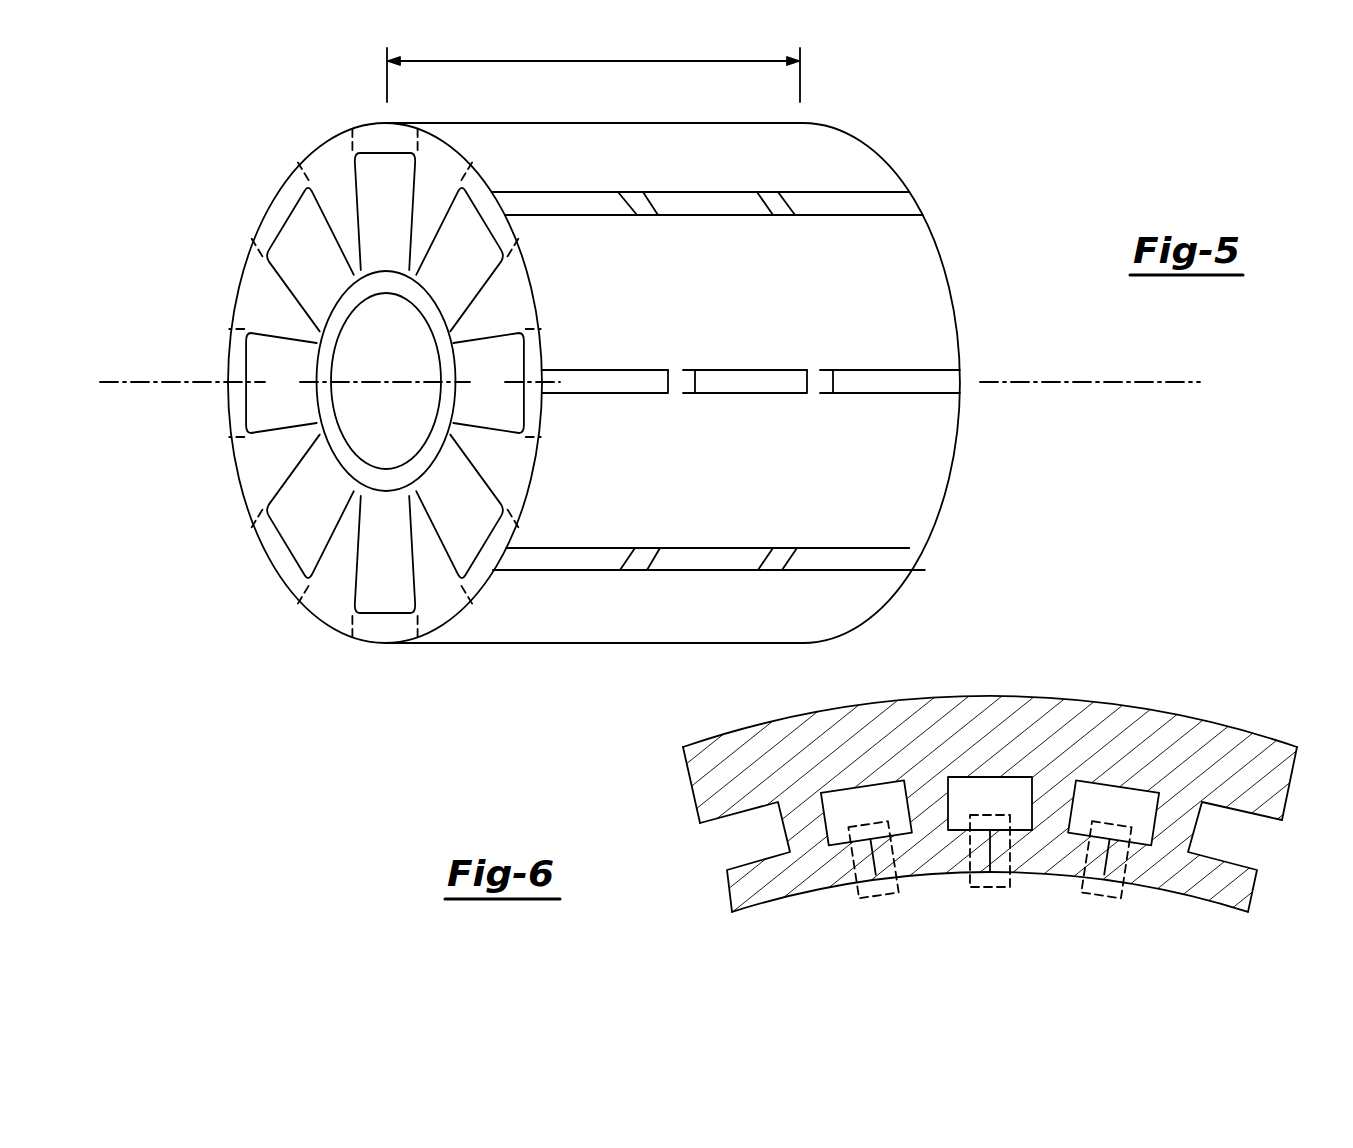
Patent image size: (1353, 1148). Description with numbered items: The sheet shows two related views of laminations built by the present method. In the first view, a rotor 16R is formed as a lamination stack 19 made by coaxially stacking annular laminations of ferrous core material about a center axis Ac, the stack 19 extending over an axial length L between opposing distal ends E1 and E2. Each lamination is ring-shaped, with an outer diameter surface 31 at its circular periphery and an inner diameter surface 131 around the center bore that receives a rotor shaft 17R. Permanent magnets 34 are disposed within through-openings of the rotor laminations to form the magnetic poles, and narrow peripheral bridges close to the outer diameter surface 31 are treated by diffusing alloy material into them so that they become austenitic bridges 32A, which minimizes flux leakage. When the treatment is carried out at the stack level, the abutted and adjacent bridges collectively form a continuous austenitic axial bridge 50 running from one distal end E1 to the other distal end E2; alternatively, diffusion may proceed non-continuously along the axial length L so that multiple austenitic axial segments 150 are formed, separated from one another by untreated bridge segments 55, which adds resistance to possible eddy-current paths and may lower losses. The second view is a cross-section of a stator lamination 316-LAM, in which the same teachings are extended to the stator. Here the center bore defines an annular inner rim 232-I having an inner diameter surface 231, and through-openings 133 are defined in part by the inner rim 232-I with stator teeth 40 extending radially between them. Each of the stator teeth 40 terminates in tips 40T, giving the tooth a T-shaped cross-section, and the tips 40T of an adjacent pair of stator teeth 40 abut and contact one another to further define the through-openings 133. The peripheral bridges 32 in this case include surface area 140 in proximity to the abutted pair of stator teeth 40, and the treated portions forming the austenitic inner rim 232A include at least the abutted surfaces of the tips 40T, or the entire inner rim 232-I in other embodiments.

In FIG. 5, the rotor 16R is at (1012, 80).
In FIG. 5, the outer diameter surface 31 is at (330, 140).
In FIG. 6, the outer diameter surface 31 is at (922, 700).
In FIG. 5, the austenitic bridges 32A is at (367, 142).
In FIG. 5, the permanent magnets 34 is at (322, 272).
In FIG. 5, the rotor shaft 17R is at (408, 444).
In FIG. 5, the inner diameter surface 131 is at (322, 345).
In FIG. 5, the center axis Ac is at (120, 398).
In FIG. 5, the first distal end E1 is at (263, 460).
In FIG. 5, the second distal end E2 is at (952, 457).
In FIG. 5, the axial length L is at (593, 74).
In FIG. 5, the continuous austenitic axial bridge 50 is at (845, 192).
In FIG. 5, the austenitic axial segments 150 is at (893, 207).
In FIG. 5, the untreated bridge segments 55 is at (772, 202).
In FIG. 5, the lamination stack 19 is at (538, 692).
In FIG. 6, the stator lamination 316-LAM is at (1180, 665).
In FIG. 6, the stator teeth 40 is at (800, 813).
In FIG. 6, the through-openings 133 is at (965, 785).
In FIG. 6, the surface area 140 is at (1020, 870).
In FIG. 6, the inner diameter surface 231 is at (802, 893).
In FIG. 6, the peripheral bridges 32 is at (822, 873).
In FIG. 6, the tips 40T is at (917, 870).
In FIG. 6, the austenitic inner rim 232A is at (1193, 873).
In FIG. 6, the annular inner rim 232-I is at (1268, 872).